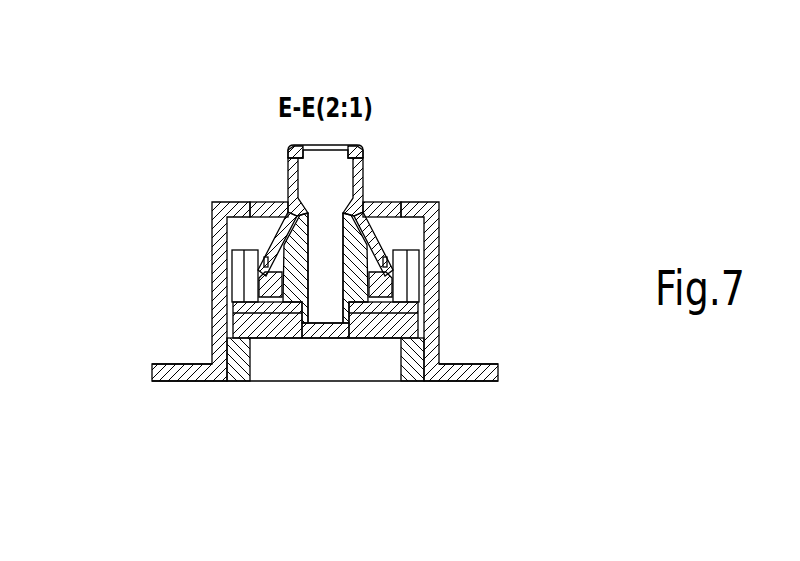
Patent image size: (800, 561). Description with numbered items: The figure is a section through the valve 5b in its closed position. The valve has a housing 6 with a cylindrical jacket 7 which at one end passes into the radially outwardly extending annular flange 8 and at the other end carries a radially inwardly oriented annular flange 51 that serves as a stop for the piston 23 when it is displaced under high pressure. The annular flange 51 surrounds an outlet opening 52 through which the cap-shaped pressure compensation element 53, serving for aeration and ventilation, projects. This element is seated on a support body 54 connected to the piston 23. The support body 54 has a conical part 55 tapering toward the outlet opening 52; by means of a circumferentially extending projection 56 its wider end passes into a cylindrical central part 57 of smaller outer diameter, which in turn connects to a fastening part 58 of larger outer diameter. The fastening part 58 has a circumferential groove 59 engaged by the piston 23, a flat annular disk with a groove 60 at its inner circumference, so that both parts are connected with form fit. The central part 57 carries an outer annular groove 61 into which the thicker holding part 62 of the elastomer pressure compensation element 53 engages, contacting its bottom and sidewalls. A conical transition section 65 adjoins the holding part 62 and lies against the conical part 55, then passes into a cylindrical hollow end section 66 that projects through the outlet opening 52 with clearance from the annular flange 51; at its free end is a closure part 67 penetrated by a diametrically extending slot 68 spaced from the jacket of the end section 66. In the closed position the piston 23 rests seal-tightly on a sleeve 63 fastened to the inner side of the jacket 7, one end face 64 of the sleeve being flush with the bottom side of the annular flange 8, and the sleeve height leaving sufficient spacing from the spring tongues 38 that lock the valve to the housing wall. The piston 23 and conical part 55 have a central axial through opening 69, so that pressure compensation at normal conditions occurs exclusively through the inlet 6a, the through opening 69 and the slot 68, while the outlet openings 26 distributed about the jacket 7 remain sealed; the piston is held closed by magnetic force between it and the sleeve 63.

The valve 5b is at (508, 120).
The housing 6 is at (449, 250).
The inlet 6a is at (313, 363).
The jacket 7 is at (428, 250).
The annular flange 8 is at (160, 381).
The piston 23 is at (410, 321).
The outlet openings 26 is at (240, 265).
The spring tongues 38 is at (235, 278).
The annular flange 51 is at (237, 208).
The outlet opening 52 is at (378, 207).
The pressure compensation element 53 is at (278, 146).
The support body 54 is at (292, 253).
The conical part 55 is at (370, 248).
The projection 56 is at (278, 284).
The central part 57 is at (287, 315).
The fastening part 58 is at (375, 320).
The circumferential groove 59 is at (265, 305).
The groove 60 is at (296, 325).
The annular groove 61 is at (285, 288).
The holding part 62 is at (384, 286).
The sleeve 63 is at (417, 367).
The end face 64 is at (408, 385).
The transition section 65 is at (428, 208).
The end section 66 is at (290, 187).
The closure part 67 is at (360, 147).
The slot 68 is at (310, 147).
The axial through opening 69 is at (327, 282).